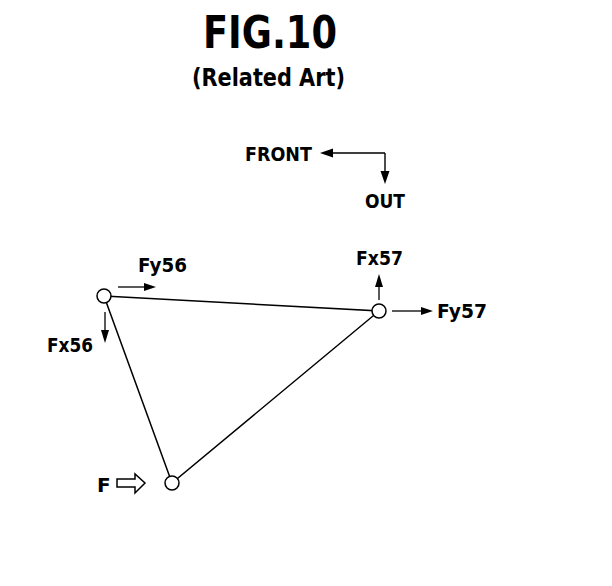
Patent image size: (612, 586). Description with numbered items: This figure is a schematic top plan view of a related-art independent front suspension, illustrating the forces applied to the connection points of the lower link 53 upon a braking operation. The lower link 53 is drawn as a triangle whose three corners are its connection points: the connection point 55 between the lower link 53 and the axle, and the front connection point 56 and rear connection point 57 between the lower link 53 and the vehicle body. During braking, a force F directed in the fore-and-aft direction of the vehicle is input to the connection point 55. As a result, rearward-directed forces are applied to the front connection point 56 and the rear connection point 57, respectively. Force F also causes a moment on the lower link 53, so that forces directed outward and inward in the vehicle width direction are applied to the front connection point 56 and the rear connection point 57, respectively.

The lower link 53 is at (284, 401).
The connection point 55 is at (172, 490).
The front connection point 56 is at (105, 288).
The rear connection point 57 is at (383, 318).